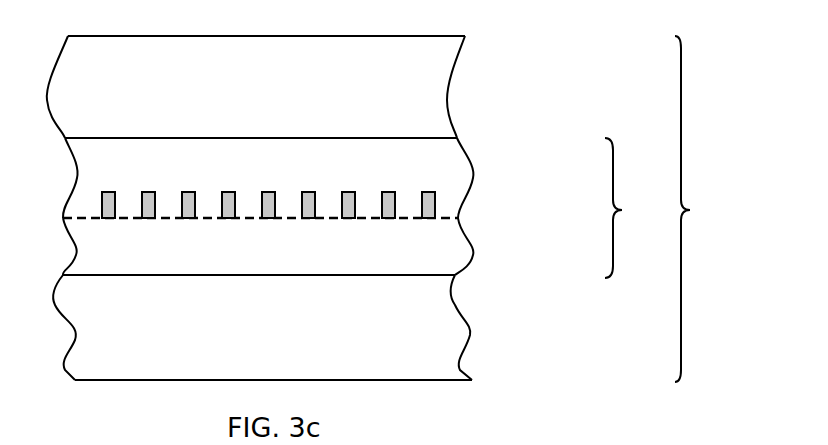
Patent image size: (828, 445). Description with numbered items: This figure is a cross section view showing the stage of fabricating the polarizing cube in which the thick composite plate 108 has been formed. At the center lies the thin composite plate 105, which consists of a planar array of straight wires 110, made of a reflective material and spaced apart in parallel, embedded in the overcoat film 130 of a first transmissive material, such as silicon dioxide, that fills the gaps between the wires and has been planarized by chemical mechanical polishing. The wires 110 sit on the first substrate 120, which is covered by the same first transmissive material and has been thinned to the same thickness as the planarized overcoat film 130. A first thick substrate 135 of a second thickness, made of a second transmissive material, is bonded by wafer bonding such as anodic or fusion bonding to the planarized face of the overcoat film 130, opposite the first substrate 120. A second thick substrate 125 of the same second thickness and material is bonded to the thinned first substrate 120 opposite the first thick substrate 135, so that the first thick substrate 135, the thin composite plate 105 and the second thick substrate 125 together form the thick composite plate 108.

The first thick substrate 135 is at (428, 68).
The overcoat film 130 is at (456, 160).
The straight wires 110 is at (433, 201).
The first substrate 120 is at (455, 240).
The second thick substrate 125 is at (455, 318).
The thin composite plate 105 is at (635, 208).
The thick composite plate 108 is at (706, 209).